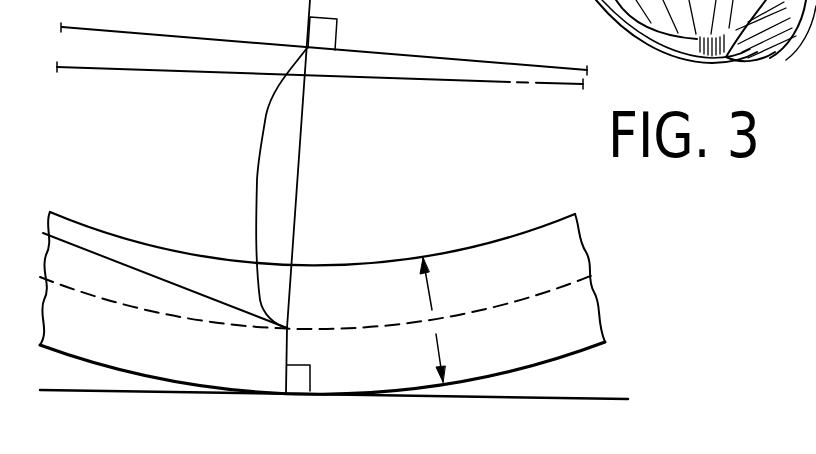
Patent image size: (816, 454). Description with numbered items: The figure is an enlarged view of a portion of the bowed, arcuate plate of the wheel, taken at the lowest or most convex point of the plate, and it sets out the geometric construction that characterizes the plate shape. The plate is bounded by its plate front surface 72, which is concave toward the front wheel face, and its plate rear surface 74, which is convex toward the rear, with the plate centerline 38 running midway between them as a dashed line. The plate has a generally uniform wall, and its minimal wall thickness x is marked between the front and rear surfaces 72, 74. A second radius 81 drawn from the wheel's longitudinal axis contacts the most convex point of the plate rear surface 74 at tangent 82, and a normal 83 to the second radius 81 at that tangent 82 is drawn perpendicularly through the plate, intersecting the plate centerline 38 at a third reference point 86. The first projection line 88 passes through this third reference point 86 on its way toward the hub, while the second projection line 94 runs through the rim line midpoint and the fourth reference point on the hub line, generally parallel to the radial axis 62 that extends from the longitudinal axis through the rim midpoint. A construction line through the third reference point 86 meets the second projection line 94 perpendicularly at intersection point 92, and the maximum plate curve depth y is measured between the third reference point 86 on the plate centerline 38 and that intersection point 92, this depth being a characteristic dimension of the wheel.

The plate centerline 38 is at (518, 301).
The radial axis 62 is at (158, 67).
The plate front surface 72 is at (497, 242).
The plate rear surface 74 is at (565, 356).
The second radius 81 is at (100, 392).
The tangent 82 is at (286, 393).
The normal 83 is at (286, 282).
The third reference point 86 is at (288, 326).
The first projection line 88 is at (78, 247).
The intersection point 92 is at (307, 48).
The second projection line 94 is at (475, 62).
The minimal wall thickness X is at (432, 320).
The maximum plate curve depth Y is at (255, 172).